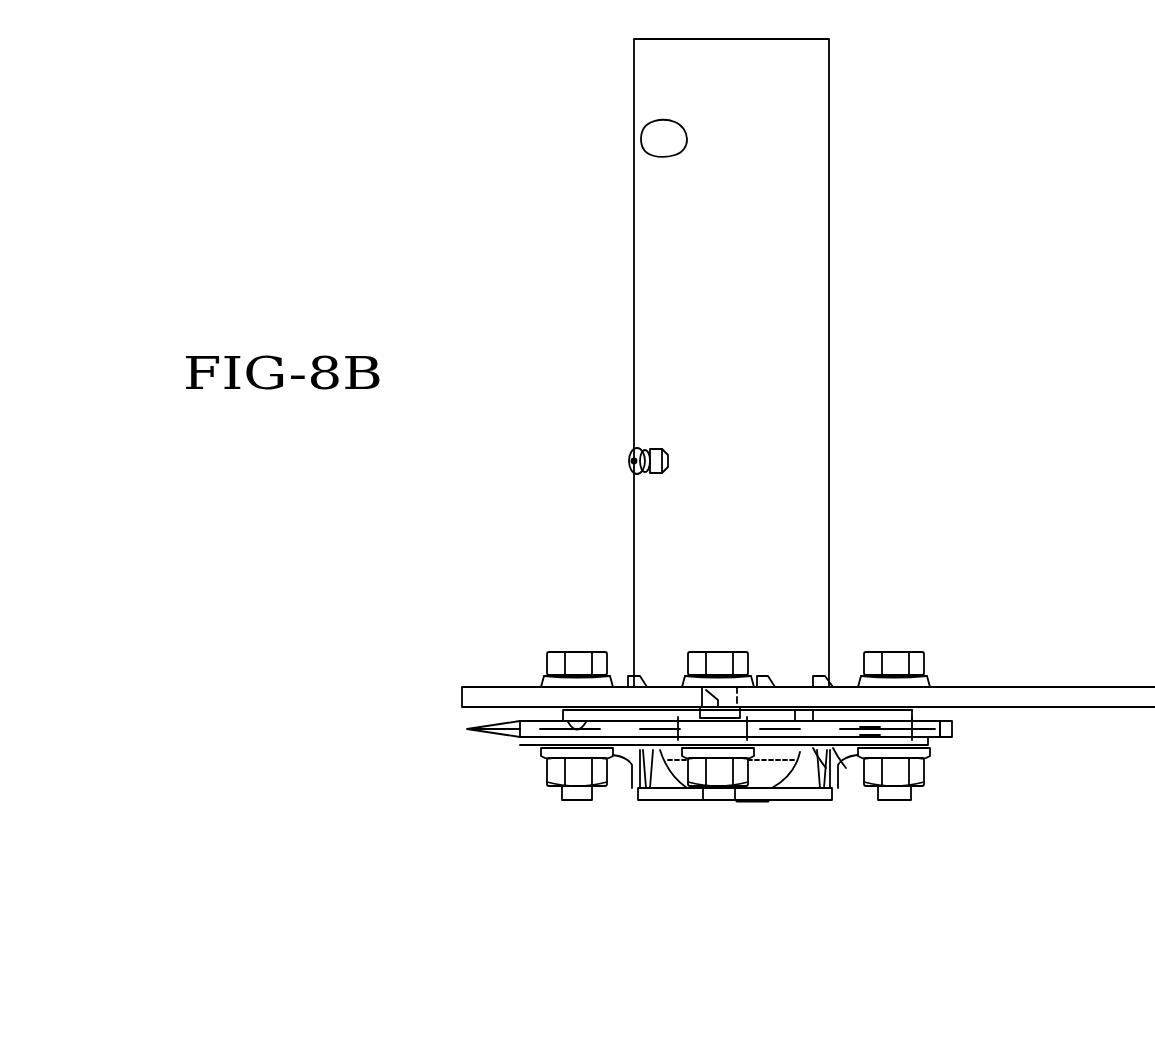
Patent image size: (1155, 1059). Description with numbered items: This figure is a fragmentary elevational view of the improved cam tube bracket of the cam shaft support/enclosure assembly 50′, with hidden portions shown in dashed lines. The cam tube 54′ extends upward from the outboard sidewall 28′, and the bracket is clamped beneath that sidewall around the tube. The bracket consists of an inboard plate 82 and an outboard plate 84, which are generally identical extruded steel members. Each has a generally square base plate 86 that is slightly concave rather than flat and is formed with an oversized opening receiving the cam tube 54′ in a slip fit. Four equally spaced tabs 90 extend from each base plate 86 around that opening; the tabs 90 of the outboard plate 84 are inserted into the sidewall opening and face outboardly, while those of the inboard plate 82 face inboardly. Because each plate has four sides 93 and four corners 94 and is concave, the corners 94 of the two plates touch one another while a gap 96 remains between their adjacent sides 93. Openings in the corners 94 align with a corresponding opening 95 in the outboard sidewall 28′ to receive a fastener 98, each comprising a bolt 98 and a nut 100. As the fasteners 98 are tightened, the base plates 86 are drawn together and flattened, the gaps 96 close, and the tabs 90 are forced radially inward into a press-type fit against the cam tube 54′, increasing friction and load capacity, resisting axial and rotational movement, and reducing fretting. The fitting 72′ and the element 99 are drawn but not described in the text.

The cam shaft support/enclosure assembly 50′ is at (834, 233).
The cam tube 54′ is at (634, 283).
The grease fitting 72′ is at (630, 455).
The outboard sidewall 28′ is at (1088, 686).
The inboard plate 82 is at (954, 717).
The outboard plate 84 is at (952, 718).
The base plate 86 is at (920, 714).
The tabs 90 is at (633, 787).
The sides 93 is at (822, 727).
The corners 94 is at (470, 730).
The opening in outboard wall 95 is at (682, 678).
The gap 96 is at (593, 723).
The fastener 98 is at (735, 651).
The lower nut 99 is at (707, 652).
The nut 100 is at (562, 782).